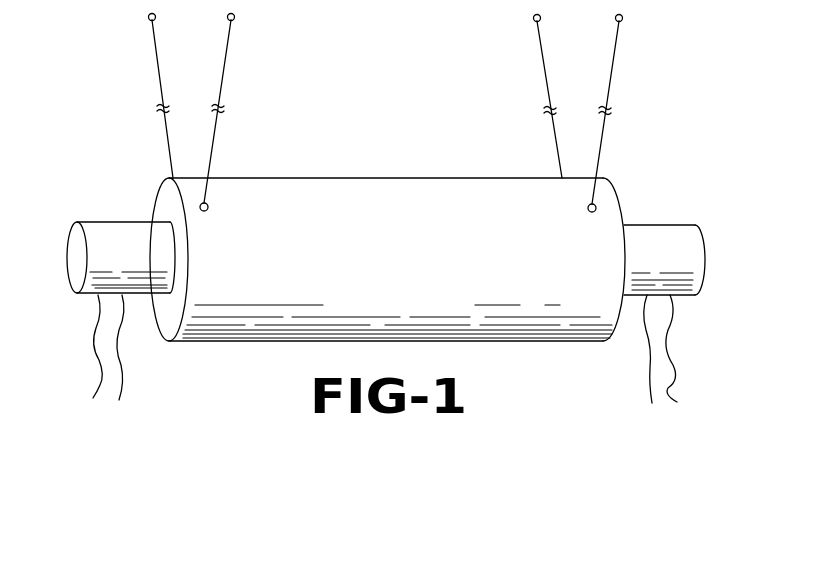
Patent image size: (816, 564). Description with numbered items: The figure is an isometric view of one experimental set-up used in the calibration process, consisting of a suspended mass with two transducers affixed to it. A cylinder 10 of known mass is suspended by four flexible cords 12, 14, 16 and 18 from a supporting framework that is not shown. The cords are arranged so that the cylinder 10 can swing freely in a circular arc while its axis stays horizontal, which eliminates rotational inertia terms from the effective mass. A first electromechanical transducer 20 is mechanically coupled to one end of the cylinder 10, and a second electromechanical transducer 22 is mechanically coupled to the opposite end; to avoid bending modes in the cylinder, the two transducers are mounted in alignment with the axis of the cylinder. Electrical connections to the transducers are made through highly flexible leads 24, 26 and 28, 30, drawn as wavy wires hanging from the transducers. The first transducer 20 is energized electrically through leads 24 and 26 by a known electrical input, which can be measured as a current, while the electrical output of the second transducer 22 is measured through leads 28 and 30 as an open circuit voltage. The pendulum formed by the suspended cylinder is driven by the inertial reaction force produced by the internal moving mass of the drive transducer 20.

The cylinder 10 is at (393, 193).
The flexible cord 12 is at (157, 60).
The flexible cord 14 is at (227, 58).
The flexible cord 16 is at (542, 50).
The flexible cord 18 is at (613, 57).
The first electromechanical transducer 20 is at (122, 238).
The second electromechanical transducer 22 is at (667, 232).
The flexible lead 24 is at (92, 363).
The flexible lead 26 is at (120, 370).
The flexible lead 28 is at (648, 375).
The flexible lead 30 is at (677, 365).